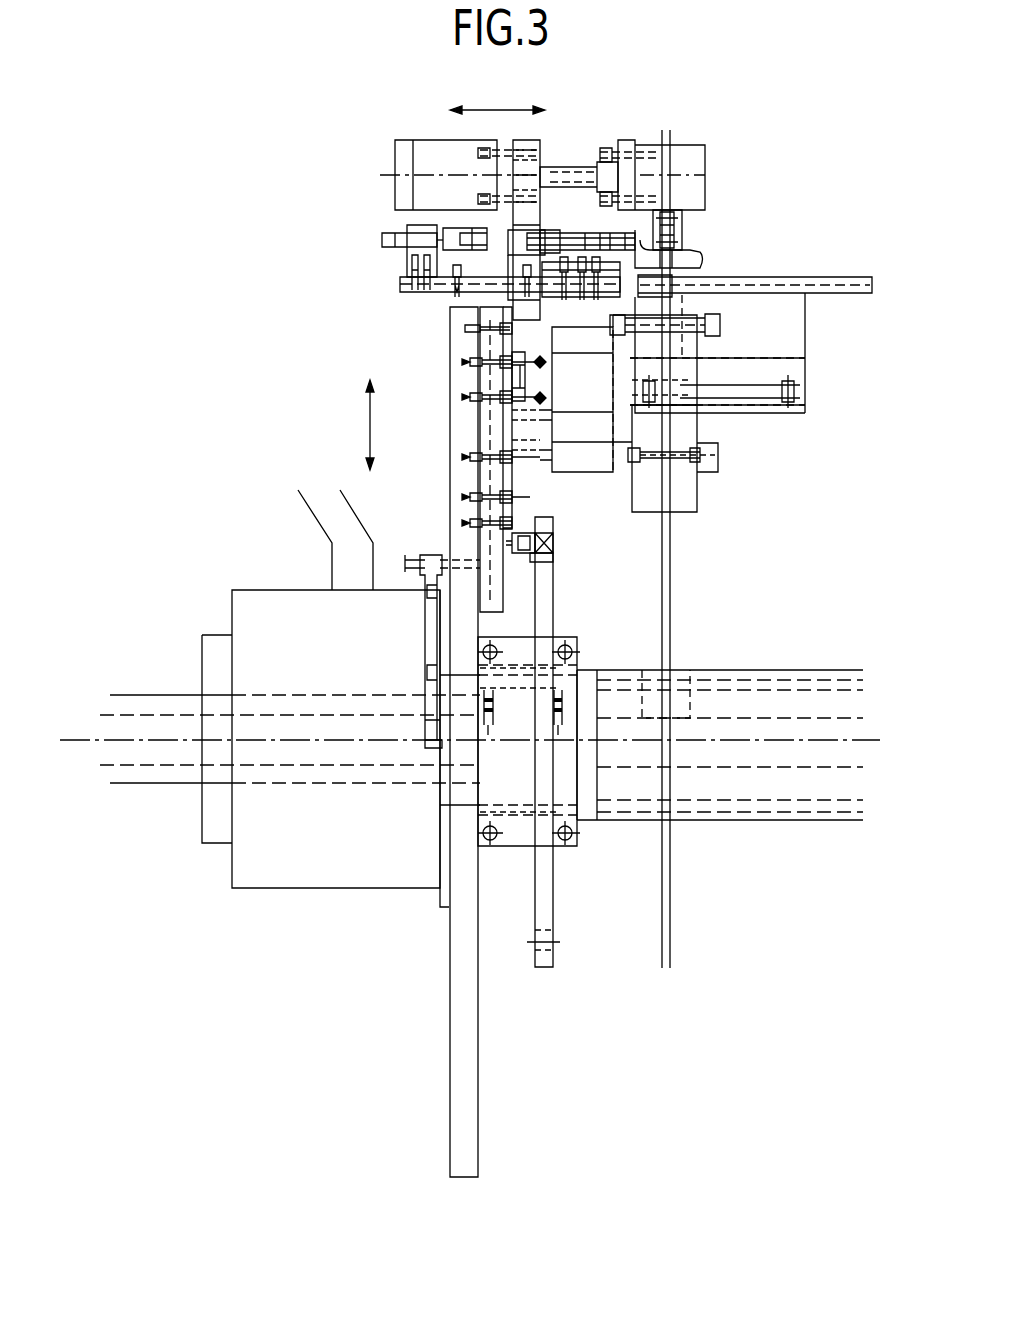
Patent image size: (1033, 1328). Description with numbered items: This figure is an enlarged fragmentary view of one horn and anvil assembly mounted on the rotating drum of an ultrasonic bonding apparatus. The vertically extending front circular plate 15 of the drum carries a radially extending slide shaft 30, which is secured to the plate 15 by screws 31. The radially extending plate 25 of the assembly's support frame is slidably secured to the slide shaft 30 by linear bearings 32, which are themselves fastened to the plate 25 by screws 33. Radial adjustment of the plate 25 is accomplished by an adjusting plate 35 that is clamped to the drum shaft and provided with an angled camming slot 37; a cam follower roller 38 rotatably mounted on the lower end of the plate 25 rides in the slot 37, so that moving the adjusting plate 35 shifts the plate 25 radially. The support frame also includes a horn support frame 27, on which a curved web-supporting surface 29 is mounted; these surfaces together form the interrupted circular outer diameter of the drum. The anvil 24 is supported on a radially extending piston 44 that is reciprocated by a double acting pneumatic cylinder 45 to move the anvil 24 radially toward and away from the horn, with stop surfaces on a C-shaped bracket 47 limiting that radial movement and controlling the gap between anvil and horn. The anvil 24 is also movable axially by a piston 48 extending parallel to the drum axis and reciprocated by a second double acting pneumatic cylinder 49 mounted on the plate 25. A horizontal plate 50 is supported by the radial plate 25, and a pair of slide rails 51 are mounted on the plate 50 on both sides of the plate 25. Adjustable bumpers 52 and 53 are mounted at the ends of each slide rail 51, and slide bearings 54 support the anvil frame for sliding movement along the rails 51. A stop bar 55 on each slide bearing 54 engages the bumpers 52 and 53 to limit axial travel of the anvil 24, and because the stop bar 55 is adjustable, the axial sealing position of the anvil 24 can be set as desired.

The front circular plate 15 is at (452, 497).
The anvil 24 is at (684, 242).
The radially extending plate 25 is at (538, 540).
The horn support frame 27 is at (605, 473).
The curved web-supporting surface 29 is at (810, 278).
The slide shaft 30 is at (486, 612).
The screw 31 is at (470, 330).
The linear bearing 32 is at (472, 365).
The screw 33 is at (522, 497).
The adjusting plate 35 is at (554, 600).
The angled camming slot 37 is at (550, 548).
The cam follower roller 38 is at (548, 562).
The piston 44 is at (683, 230).
The double acting pneumatic cylinder 45 is at (706, 192).
The C-shaped bracket 47 is at (685, 268).
The piston 48 is at (585, 165).
The double acting pneumatic cylinder 49 is at (432, 143).
The horizontal plate 50 is at (435, 292).
The slide rail 51 is at (406, 267).
The adjustable bumper 52 is at (420, 232).
The adjustable bumper 53 is at (550, 233).
The slide bearing 54 is at (585, 270).
The stop bar 55 is at (512, 228).